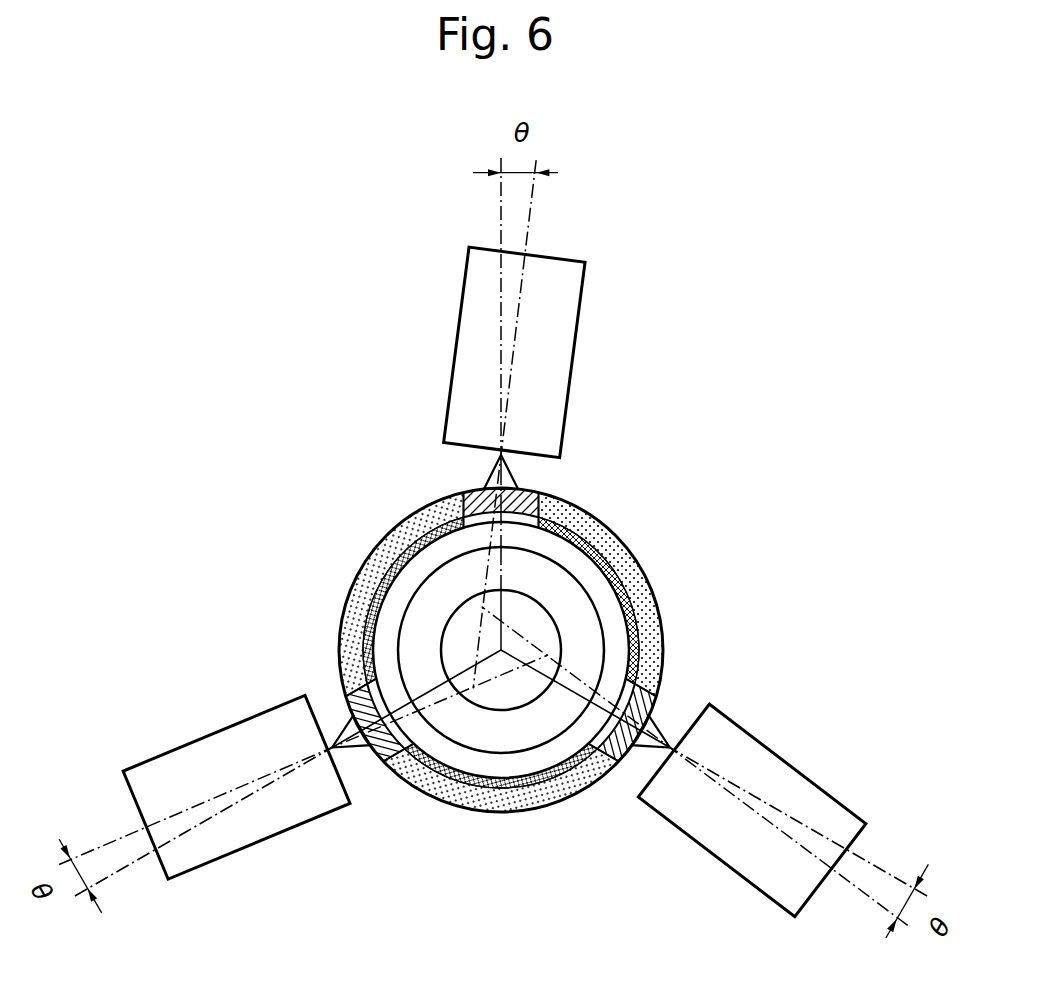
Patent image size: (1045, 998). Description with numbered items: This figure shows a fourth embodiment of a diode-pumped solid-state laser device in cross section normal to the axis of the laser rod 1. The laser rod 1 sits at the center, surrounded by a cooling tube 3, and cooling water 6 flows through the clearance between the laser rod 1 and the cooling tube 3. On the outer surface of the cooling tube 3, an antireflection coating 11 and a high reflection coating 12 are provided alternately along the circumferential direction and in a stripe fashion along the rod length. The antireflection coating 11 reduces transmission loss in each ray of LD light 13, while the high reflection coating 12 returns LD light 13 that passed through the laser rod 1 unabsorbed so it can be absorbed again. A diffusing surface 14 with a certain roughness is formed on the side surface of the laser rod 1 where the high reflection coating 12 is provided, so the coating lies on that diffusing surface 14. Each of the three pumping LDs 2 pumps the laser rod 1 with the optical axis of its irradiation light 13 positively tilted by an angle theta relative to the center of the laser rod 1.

The laser rod 1 is at (465, 610).
The pumping LD 2 is at (535, 296).
The cooling tube 3 is at (538, 758).
The cooling water 6 is at (405, 633).
The antireflection coating 11 is at (520, 484).
The high reflection coating 12 is at (380, 553).
The LD light 13 is at (465, 490).
The diffusing surface 14 is at (375, 568).